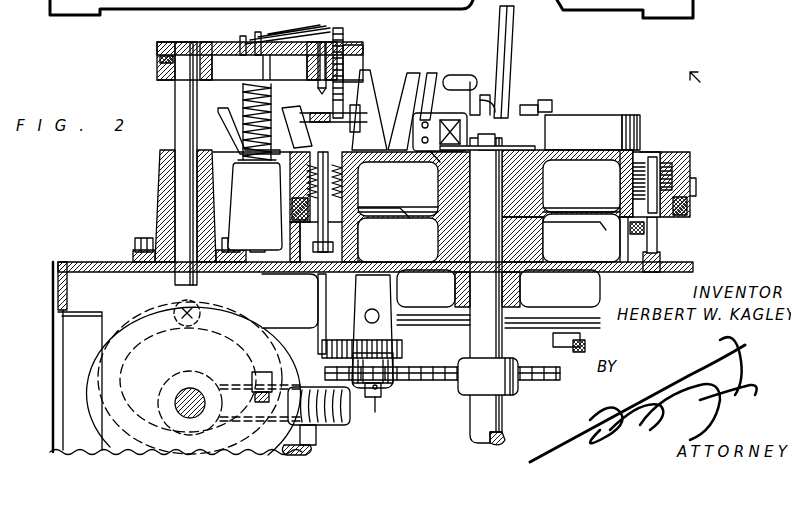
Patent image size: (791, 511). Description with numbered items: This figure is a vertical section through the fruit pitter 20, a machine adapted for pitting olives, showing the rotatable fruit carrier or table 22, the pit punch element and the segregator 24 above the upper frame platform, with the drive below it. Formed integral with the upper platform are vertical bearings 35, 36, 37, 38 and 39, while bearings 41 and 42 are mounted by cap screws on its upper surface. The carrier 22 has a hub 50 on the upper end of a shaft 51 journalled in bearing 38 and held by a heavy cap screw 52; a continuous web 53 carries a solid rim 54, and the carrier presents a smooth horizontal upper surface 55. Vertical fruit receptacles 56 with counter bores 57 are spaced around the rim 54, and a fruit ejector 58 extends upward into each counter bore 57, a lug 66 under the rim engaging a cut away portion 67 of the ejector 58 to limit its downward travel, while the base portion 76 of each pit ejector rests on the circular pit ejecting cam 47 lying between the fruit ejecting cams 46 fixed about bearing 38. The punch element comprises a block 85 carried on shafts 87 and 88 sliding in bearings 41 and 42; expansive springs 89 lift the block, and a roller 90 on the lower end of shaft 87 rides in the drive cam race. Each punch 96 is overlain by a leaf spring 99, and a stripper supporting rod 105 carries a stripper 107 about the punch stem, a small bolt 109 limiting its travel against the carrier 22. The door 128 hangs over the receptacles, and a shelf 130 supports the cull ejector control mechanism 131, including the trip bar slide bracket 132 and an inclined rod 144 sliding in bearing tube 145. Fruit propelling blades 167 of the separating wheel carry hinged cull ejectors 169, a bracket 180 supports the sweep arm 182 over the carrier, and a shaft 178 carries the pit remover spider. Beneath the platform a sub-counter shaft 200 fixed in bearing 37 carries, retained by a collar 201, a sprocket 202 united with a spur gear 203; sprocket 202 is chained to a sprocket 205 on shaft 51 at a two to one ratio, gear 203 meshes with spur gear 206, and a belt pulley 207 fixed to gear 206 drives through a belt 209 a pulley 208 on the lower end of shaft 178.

The fruit pitter 20 is at (690, 72).
The rotatable fruit carrier 22 is at (700, 170).
The segregator 24 is at (200, 112).
The vertical bearing 35 is at (280, 296).
The vertical bearing 36 is at (348, 292).
The vertical bearing 37 is at (378, 296).
The vertical bearing 38 is at (455, 296).
The vertical bearing 39 is at (561, 288).
The vertical bearing 41 is at (160, 197).
The vertical bearing 42 is at (258, 207).
The fruit ejecting cams 46 is at (403, 230).
The circular pit ejecting cam 47 is at (279, 285).
The hub 50 is at (520, 208).
The shaft 51 is at (478, 424).
The heavy cap screw 52 is at (500, 143).
The continuous web 53 is at (593, 162).
The solid rim 54 is at (692, 163).
The horizontal upper surface 55 is at (640, 128).
The vertical fruit receptacles 56 is at (655, 158).
The counter bores 57 is at (697, 187).
The fruit ejector 58 is at (598, 224).
The lug 66 is at (292, 210).
The cut away portion 67 is at (315, 228).
The base portion 76 is at (318, 252).
The block 85 is at (220, 43).
The slide shaft 87 is at (175, 143).
The shaft 88 is at (243, 92).
The expansive springs 89 is at (243, 132).
The roller 90 is at (194, 378).
The punch 96 is at (275, 40).
The leaf springs 99 is at (256, 33).
The stripper supporting rod 105 is at (352, 62).
The stripper 107 is at (310, 112).
The small bolt 109 is at (360, 105).
The door 128 is at (418, 151).
The shelf 130 is at (536, 106).
The cull ejector control mechanism 131 is at (469, 68).
The trip bar slide bracket 132 is at (552, 104).
The rod 144 is at (520, 108).
The bearing tube 145 is at (512, 23).
The fruit propelling blades 167 is at (398, 110).
The cull ejector 169 is at (392, 151).
The shaft 178 is at (555, 351).
The bracket 180 is at (654, 150).
The sweep arm 182 is at (603, 128).
The sub-counter shaft 200 is at (376, 398).
The collar 201 is at (384, 392).
The sprocket 202 is at (394, 386).
The spur gear 203 is at (400, 352).
The sprocket 205 is at (518, 386).
The spur gear 206 is at (336, 340).
The belt pulley 207 is at (300, 348).
The pulley 208 is at (588, 355).
The belt 209 is at (557, 345).